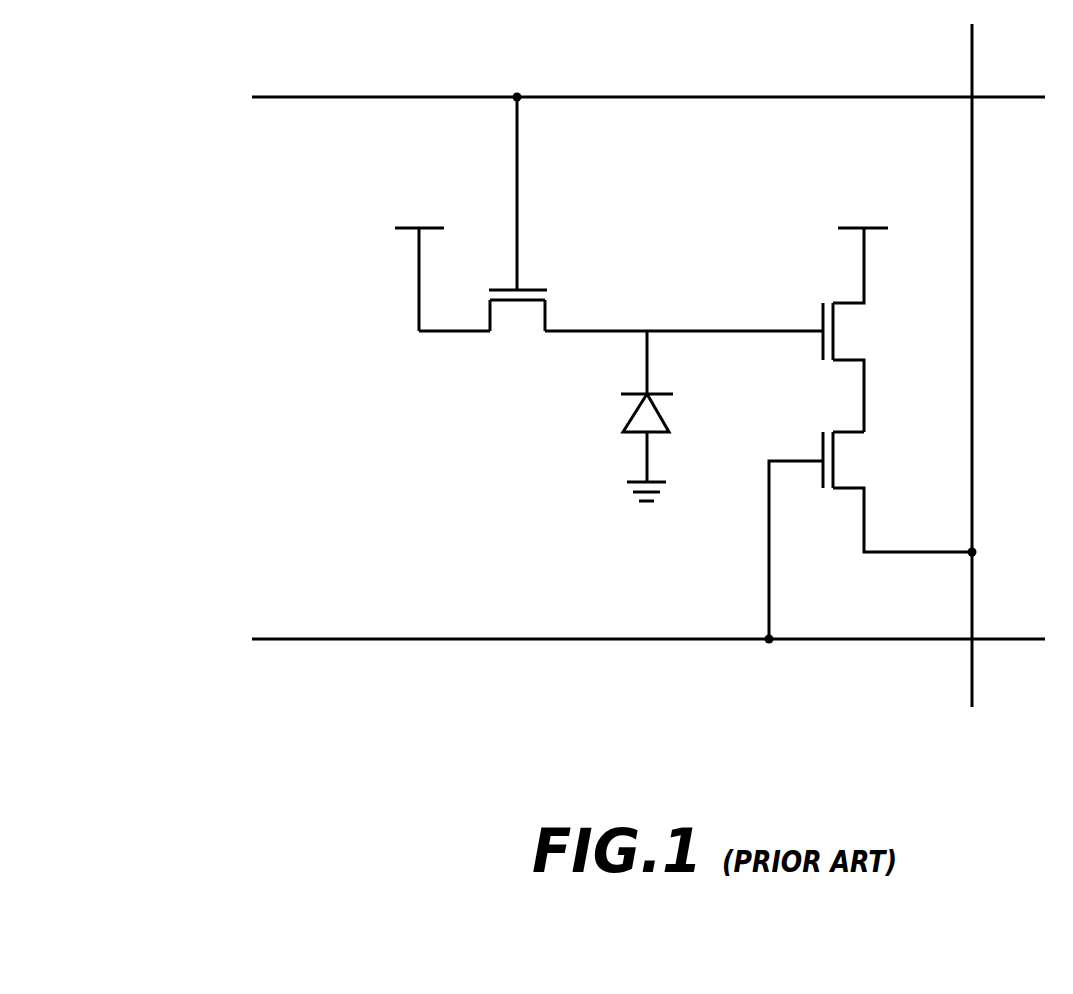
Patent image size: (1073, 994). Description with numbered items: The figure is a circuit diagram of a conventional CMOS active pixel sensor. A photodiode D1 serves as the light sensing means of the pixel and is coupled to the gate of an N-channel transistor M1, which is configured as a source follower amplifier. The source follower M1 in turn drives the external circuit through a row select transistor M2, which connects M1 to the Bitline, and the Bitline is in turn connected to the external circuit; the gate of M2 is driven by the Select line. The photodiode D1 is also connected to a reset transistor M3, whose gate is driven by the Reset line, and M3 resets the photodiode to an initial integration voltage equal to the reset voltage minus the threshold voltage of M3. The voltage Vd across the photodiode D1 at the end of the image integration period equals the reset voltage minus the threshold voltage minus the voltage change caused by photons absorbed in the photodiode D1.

The N-channel transistor M1 is at (860, 314).
The row select transistor M2 is at (870, 535).
The reset transistor M3 is at (607, 229).
The photodiode D1 is at (626, 416).
The voltage across the photodiode Vd is at (687, 313).
The reset line Reset is at (612, 96).
The select line Select is at (581, 636).
The bit line Bitline is at (977, 383).